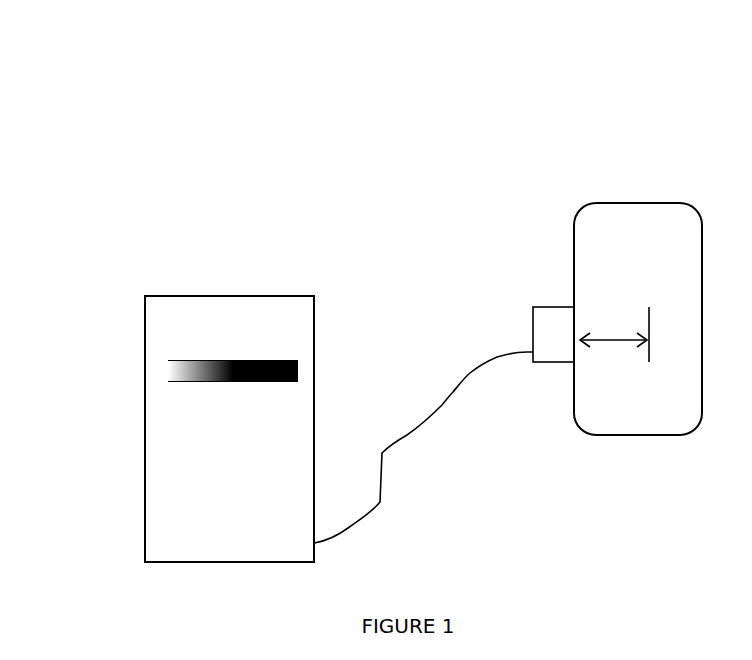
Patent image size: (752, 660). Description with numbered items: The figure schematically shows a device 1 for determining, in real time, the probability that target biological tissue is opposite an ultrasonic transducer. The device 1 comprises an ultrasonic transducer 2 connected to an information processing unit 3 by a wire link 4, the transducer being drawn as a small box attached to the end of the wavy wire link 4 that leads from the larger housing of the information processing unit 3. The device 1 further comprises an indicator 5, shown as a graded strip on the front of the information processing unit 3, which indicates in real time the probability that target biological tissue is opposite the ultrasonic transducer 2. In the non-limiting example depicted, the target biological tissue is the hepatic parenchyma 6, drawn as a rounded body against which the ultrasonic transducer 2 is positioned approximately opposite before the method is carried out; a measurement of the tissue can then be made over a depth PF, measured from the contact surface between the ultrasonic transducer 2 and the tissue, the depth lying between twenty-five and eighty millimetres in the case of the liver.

The device 1 is at (296, 200).
The ultrasonic transducer 2 is at (553, 334).
The information processing unit 3 is at (138, 287).
The wire link 4 is at (451, 414).
The indicator 5 is at (152, 390).
The hepatic parenchyma 6 is at (638, 319).